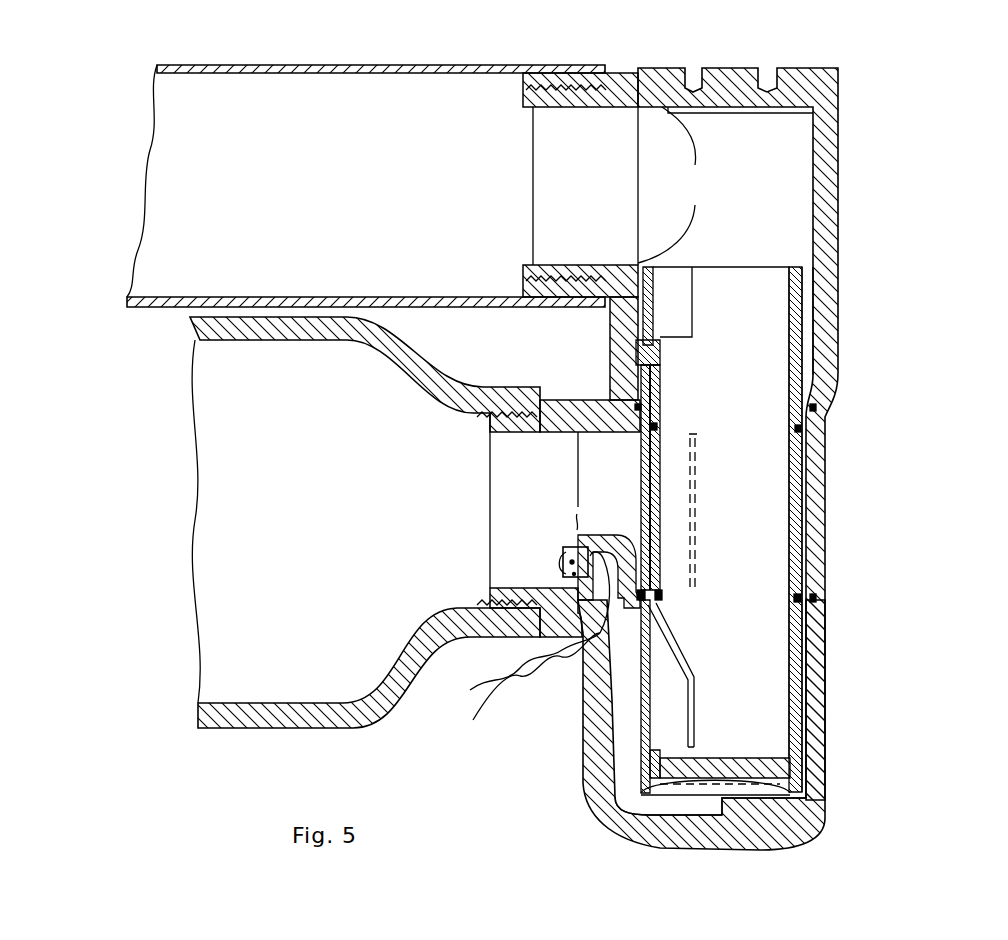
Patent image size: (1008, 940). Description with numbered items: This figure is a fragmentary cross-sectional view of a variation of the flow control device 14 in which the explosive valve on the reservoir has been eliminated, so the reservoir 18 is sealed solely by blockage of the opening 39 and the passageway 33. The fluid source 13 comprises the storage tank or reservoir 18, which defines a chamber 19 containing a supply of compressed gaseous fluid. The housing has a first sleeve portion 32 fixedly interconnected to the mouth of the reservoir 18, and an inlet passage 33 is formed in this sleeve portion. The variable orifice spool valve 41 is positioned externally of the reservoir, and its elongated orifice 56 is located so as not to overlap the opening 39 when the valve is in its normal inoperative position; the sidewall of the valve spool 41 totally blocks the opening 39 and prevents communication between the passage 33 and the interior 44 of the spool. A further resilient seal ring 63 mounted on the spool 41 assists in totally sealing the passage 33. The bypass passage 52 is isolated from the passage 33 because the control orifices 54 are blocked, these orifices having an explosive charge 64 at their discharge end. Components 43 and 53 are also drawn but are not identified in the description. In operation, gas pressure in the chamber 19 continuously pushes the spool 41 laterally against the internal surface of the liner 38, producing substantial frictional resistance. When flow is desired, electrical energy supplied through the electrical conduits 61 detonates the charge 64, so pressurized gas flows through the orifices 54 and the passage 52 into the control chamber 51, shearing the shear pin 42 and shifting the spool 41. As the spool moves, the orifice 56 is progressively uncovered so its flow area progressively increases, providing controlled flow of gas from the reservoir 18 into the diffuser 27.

The fluid source 13 is at (365, 553).
The flow control device 14 is at (842, 215).
The reservoir 18 is at (325, 718).
The chamber 19 is at (355, 638).
The diffuser 27 is at (152, 130).
The first sleeve portion 32 is at (556, 412).
The inlet passage 33 is at (598, 445).
The liner 38 is at (808, 310).
The opening 39 is at (688, 450).
The spool valve 41 is at (796, 530).
The shear pin 42 is at (648, 350).
The seal ring 43 is at (801, 430).
The interior of the valve spool 44 is at (722, 512).
The control chamber 51 is at (700, 805).
The bypass passage 52 is at (666, 736).
The block 53 is at (570, 553).
The control orifices 54 is at (566, 570).
The elongated orifice 56 is at (674, 675).
The electrical conduits 61 is at (770, 108).
The resilient seal ring 63 is at (802, 597).
The explosive charge 64 is at (600, 560).